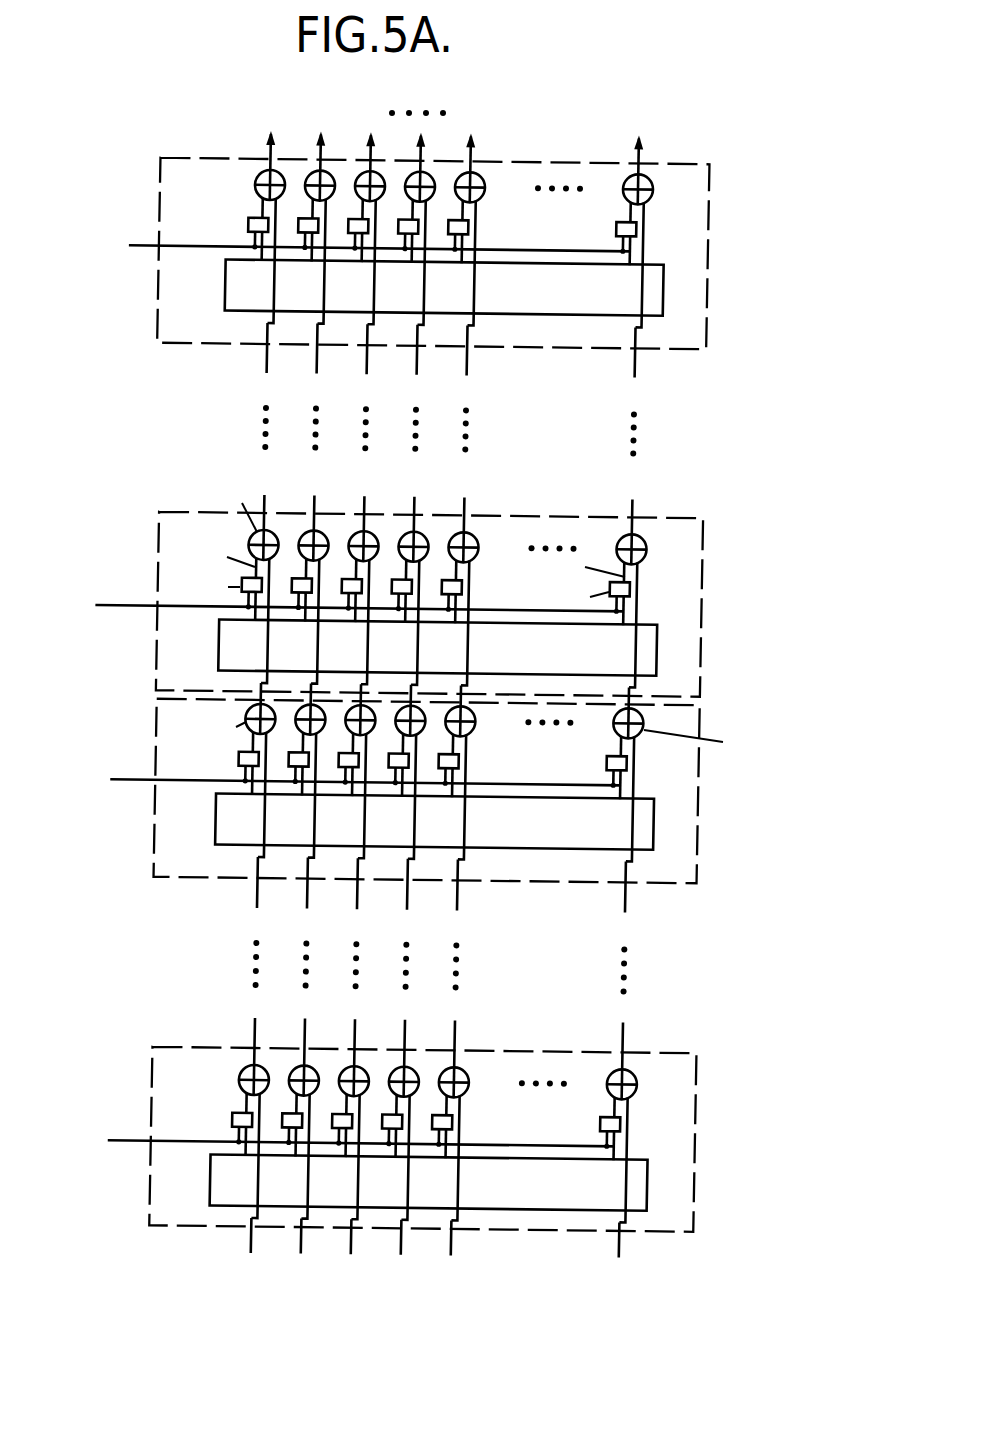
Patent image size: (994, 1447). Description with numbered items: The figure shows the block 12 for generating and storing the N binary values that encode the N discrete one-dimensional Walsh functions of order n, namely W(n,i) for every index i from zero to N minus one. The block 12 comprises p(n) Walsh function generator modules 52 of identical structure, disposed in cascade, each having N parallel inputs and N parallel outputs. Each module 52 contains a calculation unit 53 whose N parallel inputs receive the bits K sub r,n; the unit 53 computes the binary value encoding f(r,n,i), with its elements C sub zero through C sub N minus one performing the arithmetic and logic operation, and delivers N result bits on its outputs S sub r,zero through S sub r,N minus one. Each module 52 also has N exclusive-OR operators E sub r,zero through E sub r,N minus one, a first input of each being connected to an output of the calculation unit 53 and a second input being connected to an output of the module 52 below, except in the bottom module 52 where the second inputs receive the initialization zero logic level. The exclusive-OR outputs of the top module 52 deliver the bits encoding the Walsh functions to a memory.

The block 12 is at (172, 144).
The Walsh function generator module 52 is at (710, 293).
The calculation unit 53 is at (657, 652).